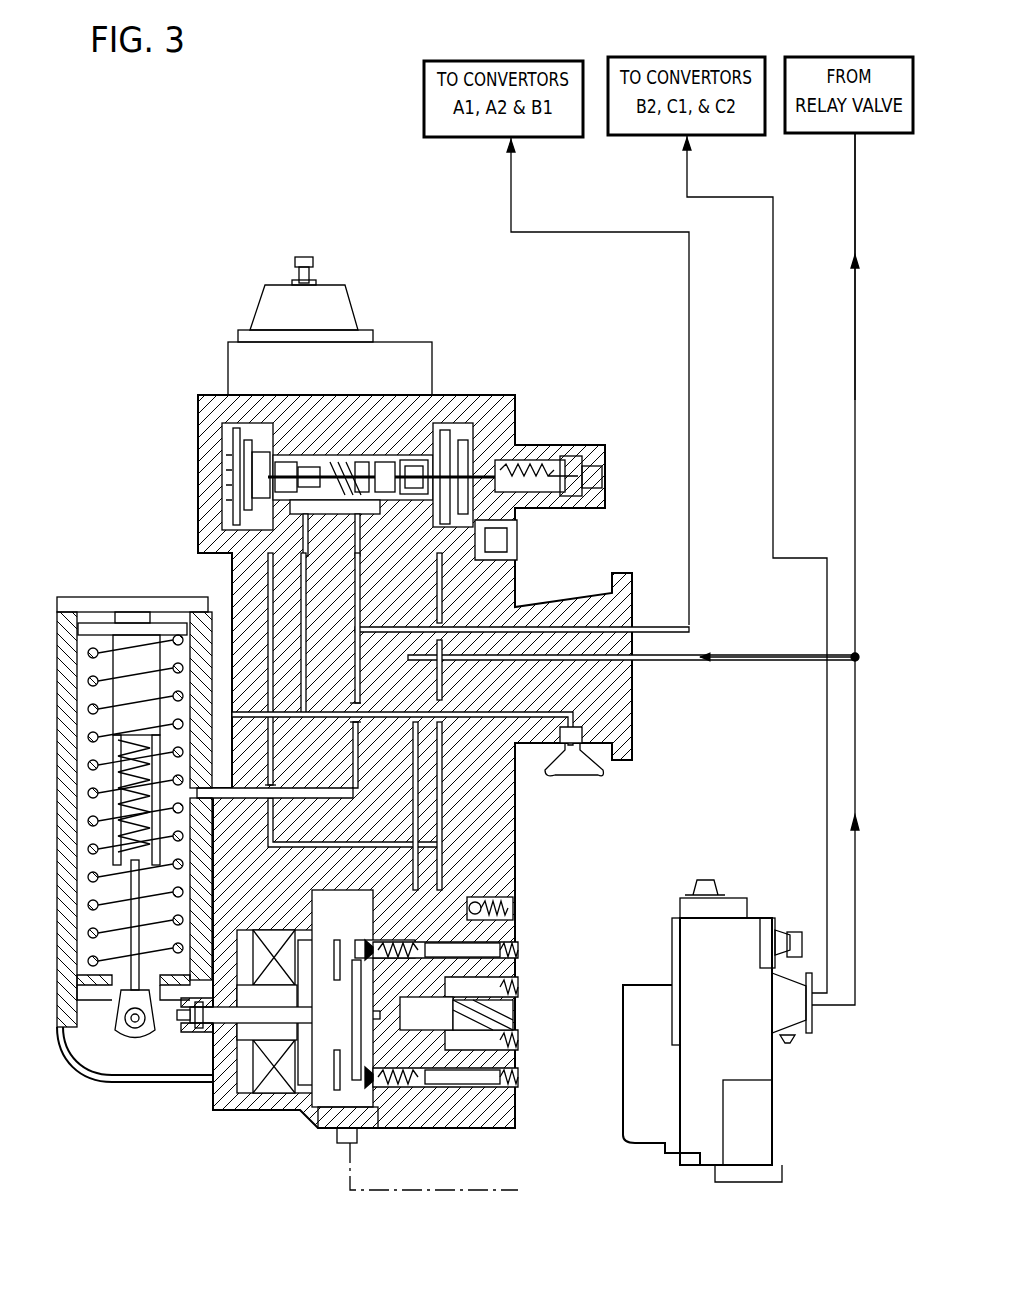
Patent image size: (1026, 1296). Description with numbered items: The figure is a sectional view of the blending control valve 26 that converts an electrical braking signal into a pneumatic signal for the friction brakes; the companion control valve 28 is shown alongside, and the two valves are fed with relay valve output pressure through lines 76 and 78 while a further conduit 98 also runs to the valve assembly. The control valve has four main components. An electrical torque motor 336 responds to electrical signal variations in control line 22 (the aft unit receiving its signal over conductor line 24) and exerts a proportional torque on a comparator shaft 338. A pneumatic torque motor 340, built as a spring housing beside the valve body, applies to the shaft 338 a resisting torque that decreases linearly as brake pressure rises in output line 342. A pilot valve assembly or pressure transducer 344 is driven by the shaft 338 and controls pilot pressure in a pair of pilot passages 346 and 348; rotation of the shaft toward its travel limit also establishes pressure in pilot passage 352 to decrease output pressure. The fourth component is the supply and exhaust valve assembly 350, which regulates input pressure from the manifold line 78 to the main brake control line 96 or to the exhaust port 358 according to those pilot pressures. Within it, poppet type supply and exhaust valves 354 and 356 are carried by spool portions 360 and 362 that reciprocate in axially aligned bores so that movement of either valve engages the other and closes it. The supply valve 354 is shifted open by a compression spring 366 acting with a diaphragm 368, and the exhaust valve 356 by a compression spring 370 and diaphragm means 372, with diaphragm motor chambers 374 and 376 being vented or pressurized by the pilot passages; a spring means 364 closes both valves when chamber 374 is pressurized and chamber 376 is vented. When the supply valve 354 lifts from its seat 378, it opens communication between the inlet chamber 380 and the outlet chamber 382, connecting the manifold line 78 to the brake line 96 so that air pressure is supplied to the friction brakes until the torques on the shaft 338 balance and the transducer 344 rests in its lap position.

The control line 22 is at (464, 1188).
The conductor line 24 is at (770, 1177).
The control valve 26 is at (535, 826).
The control valve 28 is at (738, 994).
The line 76 is at (860, 409).
The line 78 is at (361, 577).
The main brake control line 96 is at (303, 577).
The conduit to convertors 98 is at (770, 416).
The electrical torque motor 336 is at (268, 932).
The comparator shaft 338 is at (368, 1008).
The pneumatic torque motor 340 is at (110, 860).
The output line 342 is at (338, 788).
The pilot valve assembly 344 is at (352, 950).
The pilot passage 346 is at (442, 577).
The pilot passage 348 is at (465, 775).
The supply and exhaust valve assembly 350 is at (188, 484).
The pilot passage 352 is at (268, 560).
The supply valve 354 is at (364, 460).
The exhaust valve 356 is at (313, 450).
The exhaust port 358 is at (562, 712).
The spool portion 360 is at (290, 455).
The spool portion 362 is at (420, 462).
The spring means 364 is at (340, 460).
The compression spring 366 is at (538, 466).
The diaphragm 368 is at (490, 420).
The compression spring 370 is at (247, 432).
The diaphragm means 372 is at (230, 445).
The diaphragm motor chamber 374 is at (507, 533).
The diaphragm motor chamber 376 is at (225, 520).
The seat 378 is at (392, 455).
The inlet chamber 380 is at (395, 500).
The outlet chamber 382 is at (345, 500).